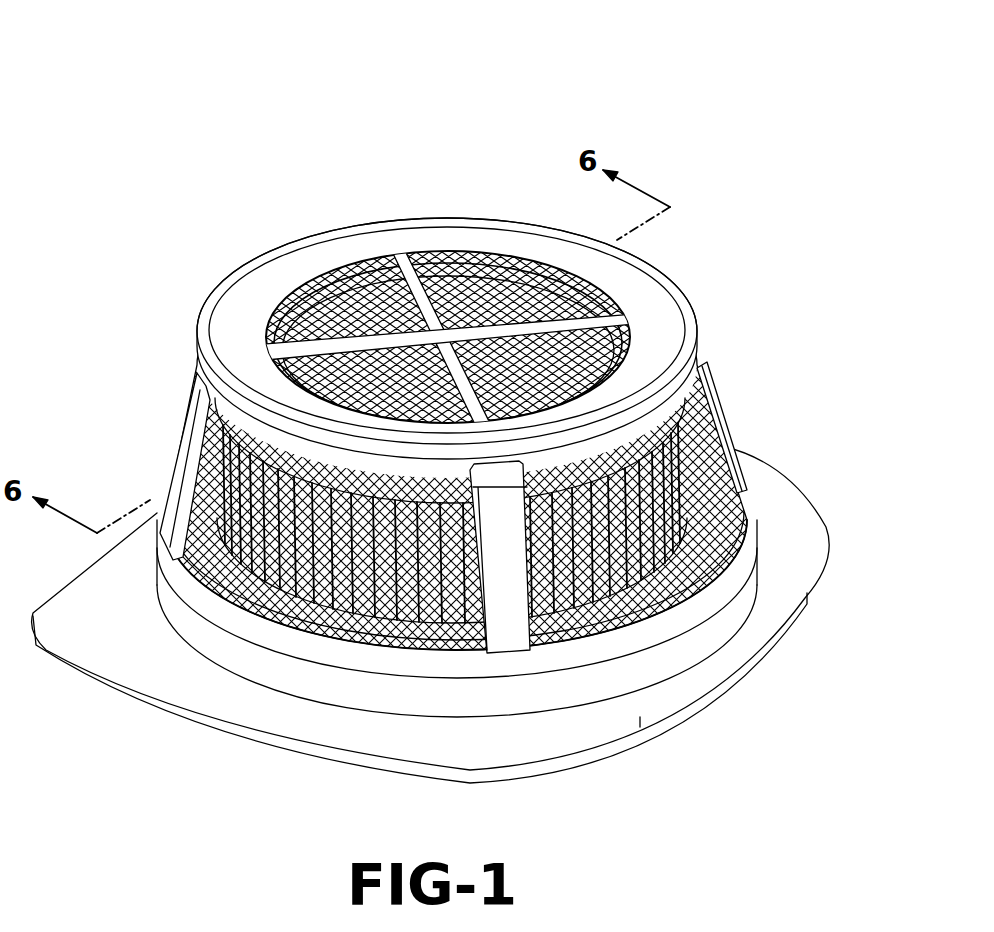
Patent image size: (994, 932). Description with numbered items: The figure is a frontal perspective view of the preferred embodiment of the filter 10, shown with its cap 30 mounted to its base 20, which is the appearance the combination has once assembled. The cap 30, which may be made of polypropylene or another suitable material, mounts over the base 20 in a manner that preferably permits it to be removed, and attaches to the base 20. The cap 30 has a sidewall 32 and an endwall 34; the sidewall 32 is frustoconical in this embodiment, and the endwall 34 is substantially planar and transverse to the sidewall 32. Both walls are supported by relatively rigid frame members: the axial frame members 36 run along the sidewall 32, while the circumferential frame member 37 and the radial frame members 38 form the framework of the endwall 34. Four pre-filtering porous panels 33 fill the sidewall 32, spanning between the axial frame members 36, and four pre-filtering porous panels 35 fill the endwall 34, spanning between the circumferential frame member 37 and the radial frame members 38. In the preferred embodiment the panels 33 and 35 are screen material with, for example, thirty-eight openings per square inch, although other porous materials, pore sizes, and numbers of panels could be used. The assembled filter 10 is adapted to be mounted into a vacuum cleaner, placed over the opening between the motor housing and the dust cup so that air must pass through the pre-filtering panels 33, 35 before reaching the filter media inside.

The filter 10 is at (104, 112).
The base 20 is at (787, 567).
The cap 30 is at (203, 330).
The sidewall 32 is at (178, 412).
The pre-filtering porous panels 33 is at (287, 567).
The endwall 34 is at (360, 240).
The pre-filtering porous panels 35 is at (313, 297).
The axial frame members 36 is at (180, 470).
The circumferential frame member 37 is at (653, 313).
The radial frame members 38 is at (423, 273).